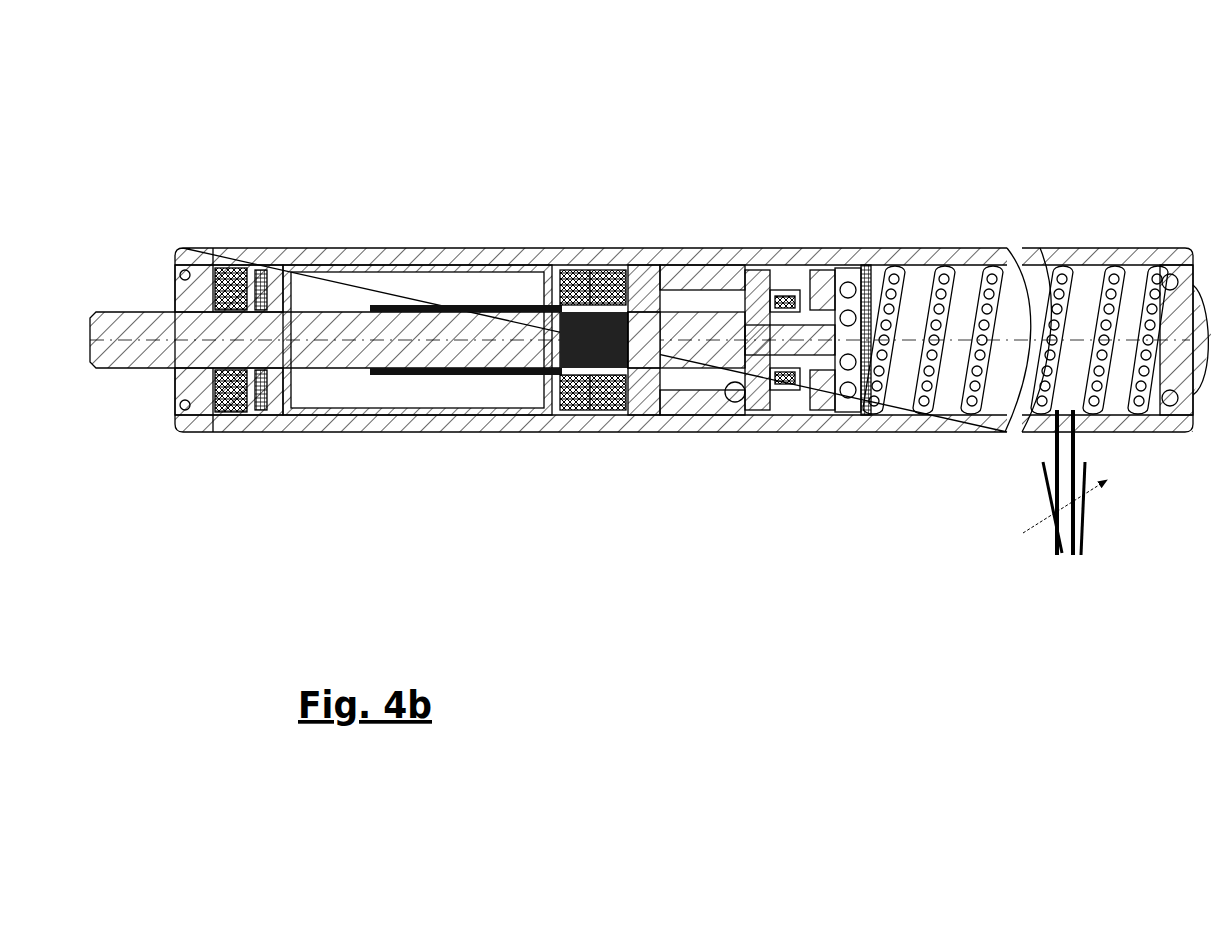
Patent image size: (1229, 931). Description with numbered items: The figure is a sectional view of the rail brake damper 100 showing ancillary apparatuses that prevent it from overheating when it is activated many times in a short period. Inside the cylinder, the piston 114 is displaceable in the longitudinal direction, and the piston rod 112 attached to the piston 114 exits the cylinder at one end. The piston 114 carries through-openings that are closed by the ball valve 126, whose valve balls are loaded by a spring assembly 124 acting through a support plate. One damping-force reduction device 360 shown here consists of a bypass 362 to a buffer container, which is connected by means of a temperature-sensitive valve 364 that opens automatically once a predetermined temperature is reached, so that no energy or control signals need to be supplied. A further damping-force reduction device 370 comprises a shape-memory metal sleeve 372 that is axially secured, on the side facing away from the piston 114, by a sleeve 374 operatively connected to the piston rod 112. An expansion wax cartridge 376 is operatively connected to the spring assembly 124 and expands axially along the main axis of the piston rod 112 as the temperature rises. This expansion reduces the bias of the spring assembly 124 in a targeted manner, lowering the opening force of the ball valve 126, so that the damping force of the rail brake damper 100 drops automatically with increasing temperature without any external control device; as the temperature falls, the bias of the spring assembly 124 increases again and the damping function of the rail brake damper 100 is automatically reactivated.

The rail brake damper 100 is at (1015, 148).
The piston rod 112 is at (110, 322).
The piston 114 is at (685, 398).
The spring assembly 124 is at (573, 392).
The ball valve 126 is at (637, 298).
The damping-force reduction device 360 is at (996, 573).
The bypass 362 is at (1060, 448).
The temperature-sensitive valve 364 is at (1082, 535).
The damping-force reduction device 370 is at (507, 172).
The shape-memory metal sleeve 372 is at (440, 308).
The sleeve 374 is at (328, 310).
The expansion wax cartridge 376 is at (583, 337).